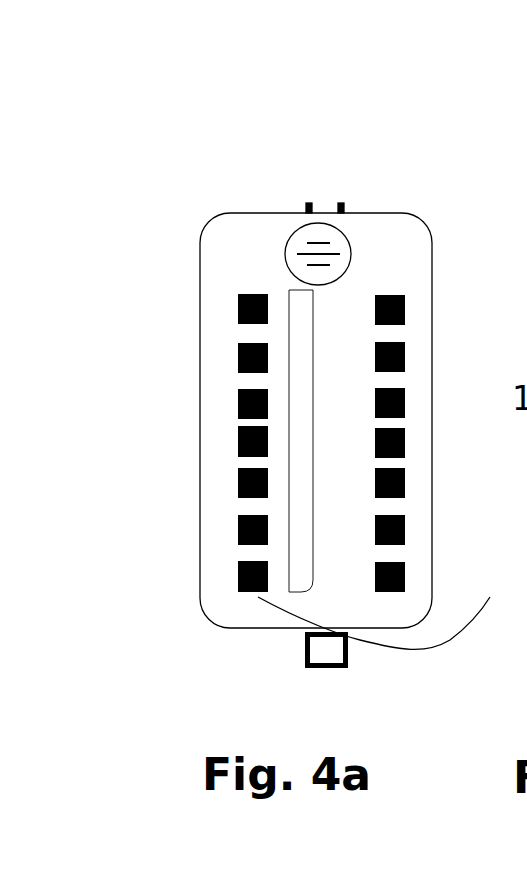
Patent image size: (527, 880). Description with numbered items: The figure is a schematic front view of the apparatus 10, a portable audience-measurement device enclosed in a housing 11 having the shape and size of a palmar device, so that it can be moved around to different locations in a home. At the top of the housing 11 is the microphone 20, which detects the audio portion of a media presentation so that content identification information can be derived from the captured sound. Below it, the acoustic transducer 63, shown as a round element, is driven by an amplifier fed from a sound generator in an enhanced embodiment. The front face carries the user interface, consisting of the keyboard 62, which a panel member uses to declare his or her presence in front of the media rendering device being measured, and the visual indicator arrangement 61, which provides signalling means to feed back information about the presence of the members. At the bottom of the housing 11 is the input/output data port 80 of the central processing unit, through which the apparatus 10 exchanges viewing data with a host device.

The apparatus 10 is at (246, 420).
The housing 11 is at (218, 467).
The microphone 20 is at (335, 203).
The visual indicator arrangement 61 is at (412, 573).
The keyboard 62 is at (313, 300).
The acoustic transducer 63 is at (352, 257).
The input/output data port 80 is at (325, 655).